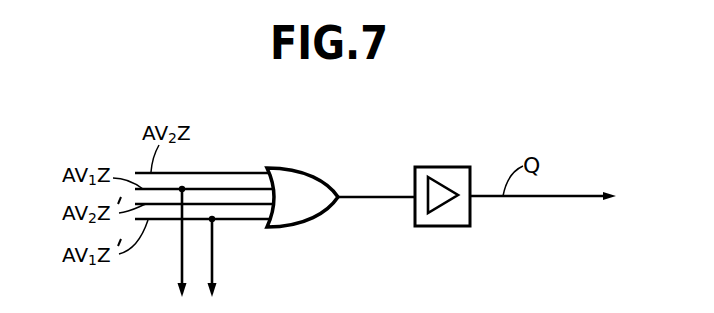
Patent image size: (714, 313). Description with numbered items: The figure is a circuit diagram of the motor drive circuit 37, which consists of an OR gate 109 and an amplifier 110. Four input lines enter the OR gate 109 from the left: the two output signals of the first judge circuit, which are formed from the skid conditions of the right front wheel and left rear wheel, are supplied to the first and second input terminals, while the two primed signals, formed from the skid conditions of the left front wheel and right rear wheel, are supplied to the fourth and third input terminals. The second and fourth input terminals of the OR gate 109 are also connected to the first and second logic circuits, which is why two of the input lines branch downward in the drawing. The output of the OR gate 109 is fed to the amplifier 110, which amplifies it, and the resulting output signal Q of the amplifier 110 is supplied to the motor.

The OR gate 109 is at (291, 167).
The amplifier 110 is at (443, 166).
The motor drive circuit 37 is at (502, 146).